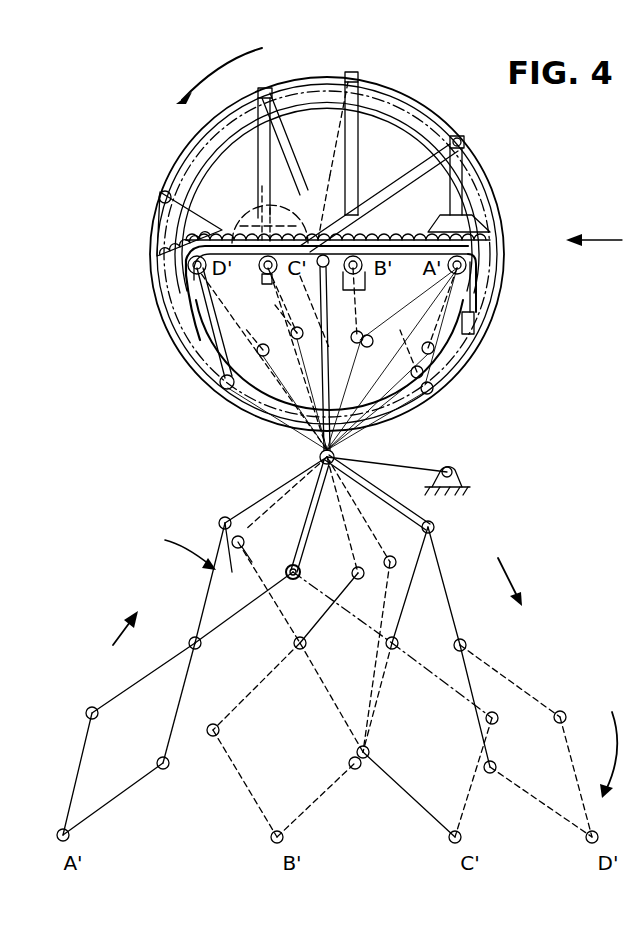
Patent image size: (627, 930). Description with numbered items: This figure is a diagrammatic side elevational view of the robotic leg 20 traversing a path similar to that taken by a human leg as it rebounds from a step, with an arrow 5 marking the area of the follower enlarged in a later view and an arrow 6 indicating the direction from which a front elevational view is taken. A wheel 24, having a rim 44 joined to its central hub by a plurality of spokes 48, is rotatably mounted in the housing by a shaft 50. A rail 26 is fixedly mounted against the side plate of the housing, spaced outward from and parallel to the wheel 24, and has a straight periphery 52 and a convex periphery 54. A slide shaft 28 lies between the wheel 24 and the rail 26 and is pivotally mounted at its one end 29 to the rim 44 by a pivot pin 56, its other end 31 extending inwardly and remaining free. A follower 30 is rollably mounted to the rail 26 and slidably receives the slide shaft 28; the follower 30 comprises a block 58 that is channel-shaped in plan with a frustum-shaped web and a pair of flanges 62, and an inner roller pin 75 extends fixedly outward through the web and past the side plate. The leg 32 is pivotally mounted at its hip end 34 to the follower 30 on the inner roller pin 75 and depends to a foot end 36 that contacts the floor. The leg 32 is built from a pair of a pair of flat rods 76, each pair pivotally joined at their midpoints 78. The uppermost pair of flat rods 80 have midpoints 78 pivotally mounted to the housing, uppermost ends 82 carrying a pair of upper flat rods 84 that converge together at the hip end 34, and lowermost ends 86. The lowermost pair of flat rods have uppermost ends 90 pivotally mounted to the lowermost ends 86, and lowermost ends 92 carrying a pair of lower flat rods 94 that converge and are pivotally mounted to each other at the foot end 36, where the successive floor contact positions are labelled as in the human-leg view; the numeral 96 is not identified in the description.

The arrow 5 is at (243, 200).
The arrow 6 is at (594, 225).
The robotic leg 20 is at (165, 140).
The wheel 24 is at (420, 92).
The rail 26 is at (178, 295).
The slide shaft 28 is at (488, 330).
The one end 29 is at (457, 135).
The follower 30 is at (485, 198).
The other end 31 is at (476, 352).
The leg 32 is at (178, 543).
The hip end 34 is at (484, 282).
The foot end 36 is at (55, 836).
The rim 44 is at (396, 90).
The spokes 48 is at (372, 192).
The shaft 50 is at (358, 280).
The straight periphery 52 is at (386, 240).
The convex periphery 54 is at (448, 400).
The pivot pin 56 is at (470, 150).
The block 58 is at (482, 216).
The flanges 62 is at (490, 231).
The inner roller pin 75 is at (468, 263).
The pair of a pair of flat rods 76 is at (470, 380).
The midpoints 78 is at (318, 456).
The uppermost pair of flat rods 80 is at (265, 490).
The uppermost ends 82 is at (358, 394).
The upper flat rods 84 is at (476, 324).
The lowermost ends 86 is at (222, 517).
The uppermost ends 90 is at (285, 578).
The lowermost ends 92 is at (99, 716).
The lower flat rods 94 is at (118, 800).
The pivot joint 96 is at (60, 826).